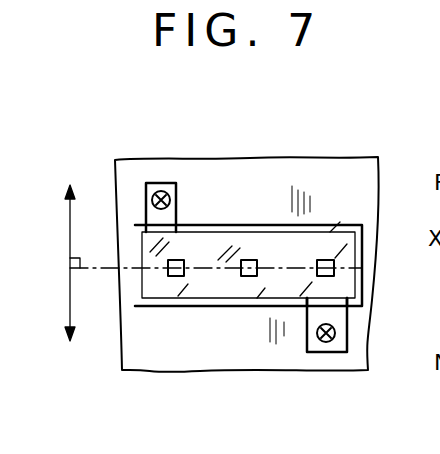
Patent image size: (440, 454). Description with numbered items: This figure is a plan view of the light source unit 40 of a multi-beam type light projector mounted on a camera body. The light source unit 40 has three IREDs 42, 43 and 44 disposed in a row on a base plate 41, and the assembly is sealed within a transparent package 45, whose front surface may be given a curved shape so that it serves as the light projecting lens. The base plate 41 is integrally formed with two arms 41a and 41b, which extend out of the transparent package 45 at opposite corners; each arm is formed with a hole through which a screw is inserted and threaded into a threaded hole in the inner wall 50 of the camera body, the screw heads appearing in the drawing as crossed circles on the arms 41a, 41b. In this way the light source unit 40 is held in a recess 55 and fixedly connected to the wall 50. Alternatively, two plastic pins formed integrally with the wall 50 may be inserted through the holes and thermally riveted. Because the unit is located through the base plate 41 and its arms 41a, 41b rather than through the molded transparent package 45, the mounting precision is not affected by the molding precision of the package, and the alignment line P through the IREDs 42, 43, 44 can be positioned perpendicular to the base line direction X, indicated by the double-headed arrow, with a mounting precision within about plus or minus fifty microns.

The light source unit 40 is at (263, 308).
The base plate 41 is at (224, 262).
The arm 41a is at (161, 190).
The arm 41b is at (326, 353).
The IRED 42 is at (176, 259).
The IRED 43 is at (250, 259).
The IRED 44 is at (326, 259).
The transparent package 45 is at (228, 228).
The inner wall 50 is at (123, 345).
The recess 55 is at (172, 306).
The alignment line P is at (215, 306).
The base line direction X is at (70, 232).